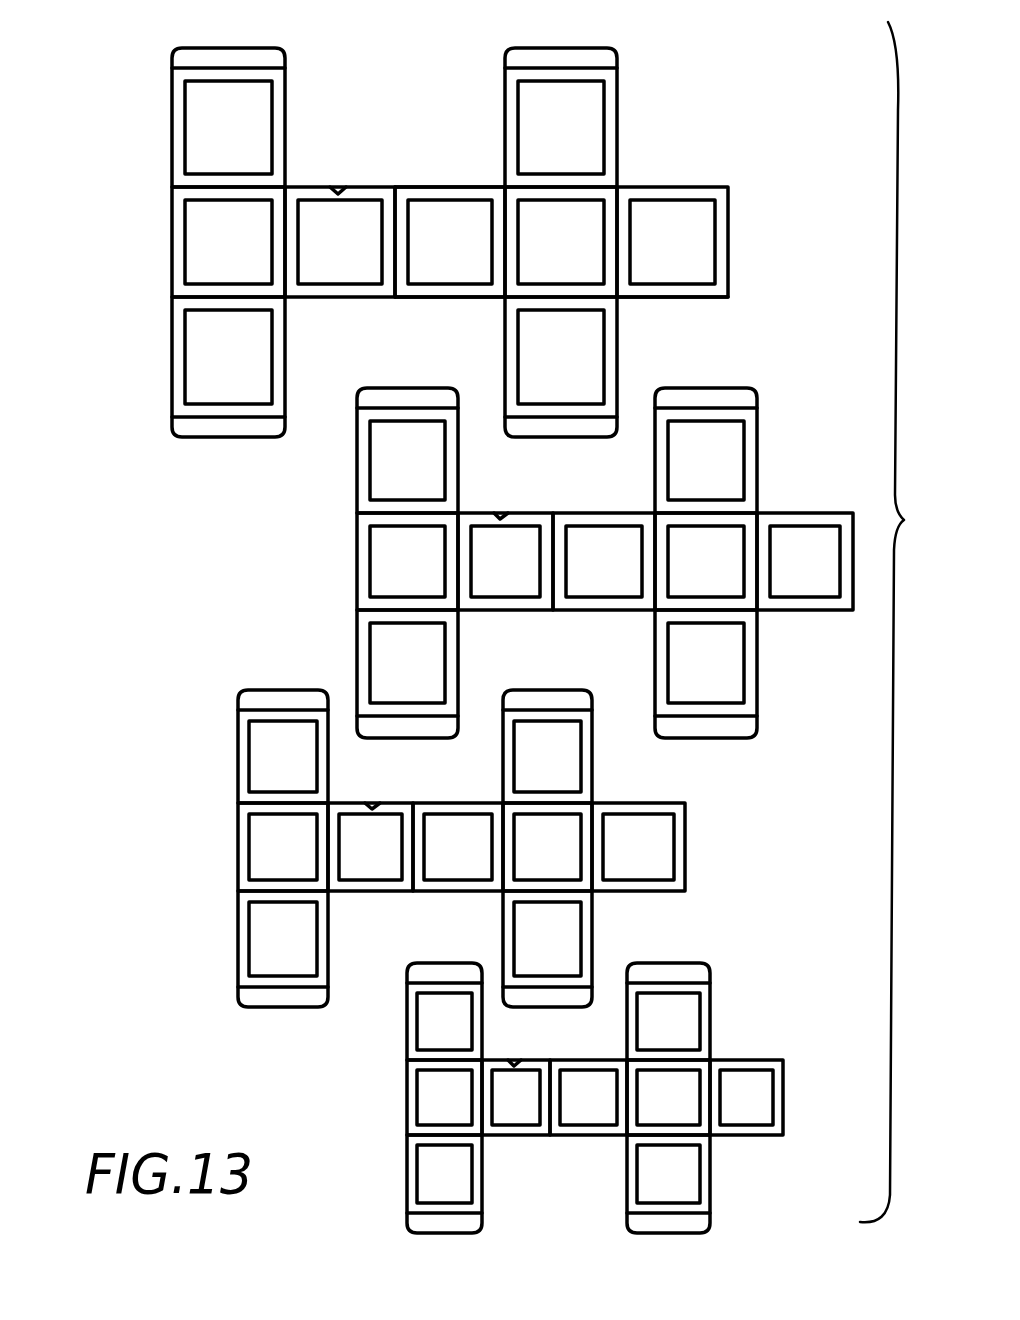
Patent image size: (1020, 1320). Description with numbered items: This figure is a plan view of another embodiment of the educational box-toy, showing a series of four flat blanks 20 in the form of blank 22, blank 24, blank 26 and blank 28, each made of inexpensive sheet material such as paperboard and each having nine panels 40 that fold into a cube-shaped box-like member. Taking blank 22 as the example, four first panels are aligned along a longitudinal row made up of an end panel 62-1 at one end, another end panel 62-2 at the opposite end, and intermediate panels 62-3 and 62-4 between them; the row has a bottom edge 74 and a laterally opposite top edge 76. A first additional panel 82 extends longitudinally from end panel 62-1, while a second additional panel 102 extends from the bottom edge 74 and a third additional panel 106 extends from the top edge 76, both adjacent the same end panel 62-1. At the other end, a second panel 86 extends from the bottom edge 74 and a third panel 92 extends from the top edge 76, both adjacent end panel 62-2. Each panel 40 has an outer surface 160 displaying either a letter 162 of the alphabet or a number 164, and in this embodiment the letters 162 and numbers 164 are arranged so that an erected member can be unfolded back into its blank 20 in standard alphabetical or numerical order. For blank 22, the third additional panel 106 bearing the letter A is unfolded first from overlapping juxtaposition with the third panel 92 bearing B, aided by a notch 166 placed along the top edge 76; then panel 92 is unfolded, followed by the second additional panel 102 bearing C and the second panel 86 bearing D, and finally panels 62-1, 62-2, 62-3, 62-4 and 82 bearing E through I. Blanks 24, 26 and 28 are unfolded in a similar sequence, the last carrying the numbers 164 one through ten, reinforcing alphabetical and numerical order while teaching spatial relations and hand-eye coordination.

The blank 20 is at (735, 244).
The blank 22 is at (733, 290).
The blank 24 is at (357, 580).
The blank 26 is at (688, 872).
The blank 28 is at (717, 1052).
The panel 40 is at (498, 185).
The end panel 62-1 is at (605, 190).
The end panel 62-2 is at (172, 290).
The intermediate panel 62-3 is at (333, 300).
The intermediate panel 62-4 is at (415, 298).
The bottom edge 74 is at (440, 302).
The top edge 76 is at (436, 185).
The first additional panel 82 is at (728, 193).
The second panel 86 is at (272, 407).
The third panel 92 is at (288, 83).
The second additional panel 102 is at (620, 356).
The third additional panel 106 is at (623, 87).
The outer surface 160 is at (175, 432).
The letter 162 is at (205, 367).
The number 164 is at (417, 1043).
The notch 166 is at (342, 190).